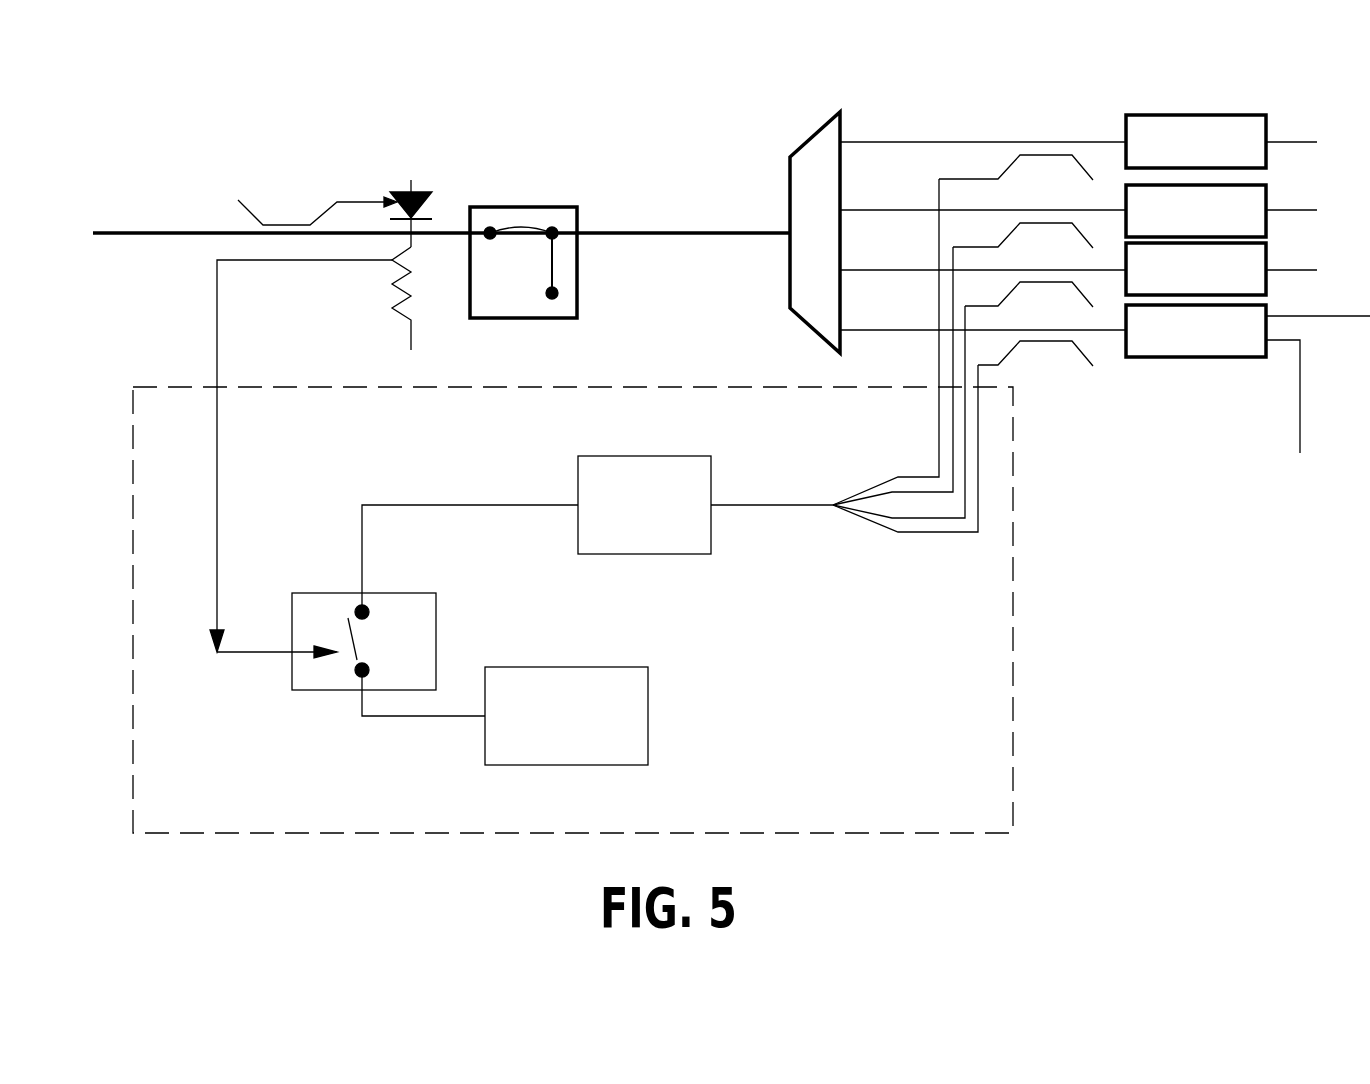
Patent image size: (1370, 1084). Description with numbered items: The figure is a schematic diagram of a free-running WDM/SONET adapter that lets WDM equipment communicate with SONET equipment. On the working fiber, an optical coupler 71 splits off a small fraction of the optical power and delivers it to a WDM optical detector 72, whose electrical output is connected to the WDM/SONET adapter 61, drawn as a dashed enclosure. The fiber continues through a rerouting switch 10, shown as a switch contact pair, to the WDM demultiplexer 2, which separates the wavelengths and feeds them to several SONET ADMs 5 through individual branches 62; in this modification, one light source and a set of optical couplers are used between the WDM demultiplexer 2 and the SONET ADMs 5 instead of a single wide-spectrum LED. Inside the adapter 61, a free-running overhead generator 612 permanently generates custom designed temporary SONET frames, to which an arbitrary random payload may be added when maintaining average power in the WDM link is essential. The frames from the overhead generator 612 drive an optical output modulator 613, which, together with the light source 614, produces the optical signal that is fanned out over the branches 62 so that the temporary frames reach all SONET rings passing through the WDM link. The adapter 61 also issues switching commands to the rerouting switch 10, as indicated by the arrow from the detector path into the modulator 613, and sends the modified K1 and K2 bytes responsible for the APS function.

The optical coupler 71 is at (292, 225).
The WDM optical detector 72 is at (418, 187).
The rerouting switch 10 is at (495, 299).
The WDM demultiplexer 2 is at (810, 262).
The SONET ADM 5 is at (1186, 157).
The monitor signal lines 62 is at (1043, 157).
The WDM/SONET adapter 61 is at (905, 803).
The free-running overhead generator 612 is at (545, 728).
The optical output modulator 613 is at (386, 647).
The light source 614 is at (636, 517).